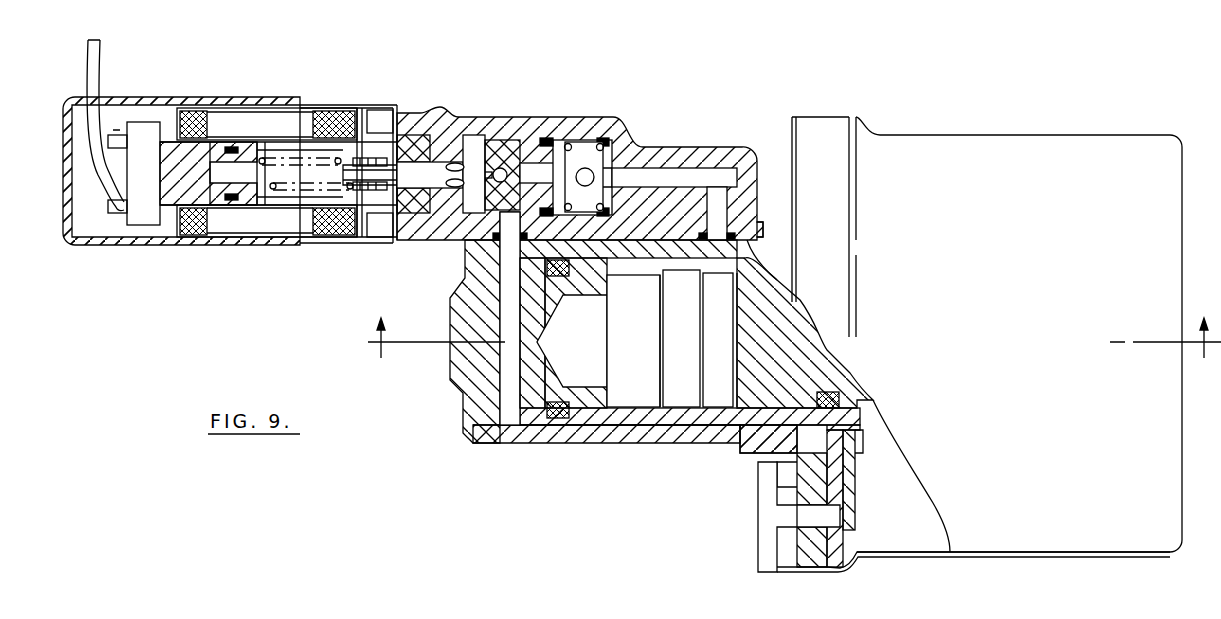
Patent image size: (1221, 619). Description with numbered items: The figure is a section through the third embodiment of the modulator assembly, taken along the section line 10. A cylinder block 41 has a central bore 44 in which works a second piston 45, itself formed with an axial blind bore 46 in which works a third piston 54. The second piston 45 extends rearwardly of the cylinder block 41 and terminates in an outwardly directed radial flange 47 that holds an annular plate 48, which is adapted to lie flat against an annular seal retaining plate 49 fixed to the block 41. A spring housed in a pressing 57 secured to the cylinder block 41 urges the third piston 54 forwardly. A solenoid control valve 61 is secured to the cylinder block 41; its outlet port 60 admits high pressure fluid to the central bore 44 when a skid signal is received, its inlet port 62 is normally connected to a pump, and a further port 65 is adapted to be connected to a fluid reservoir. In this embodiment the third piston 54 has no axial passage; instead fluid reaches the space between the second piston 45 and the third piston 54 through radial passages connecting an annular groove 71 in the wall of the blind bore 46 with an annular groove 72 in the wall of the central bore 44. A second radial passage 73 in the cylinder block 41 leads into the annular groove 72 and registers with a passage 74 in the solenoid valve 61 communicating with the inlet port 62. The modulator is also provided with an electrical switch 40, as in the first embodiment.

The section line 10- 10 is at (794, 326).
The electrical switch 40 is at (772, 542).
The cylinder block 41 is at (607, 432).
The central bore 44 is at (513, 427).
The second piston 45 is at (530, 420).
The axial blind bore 46 is at (636, 407).
The outwardly directed radial flange 47 is at (865, 434).
The annular plate 48 is at (848, 485).
The annular seal retaining plate 49 is at (852, 552).
The third piston 54 is at (803, 357).
The pressing 57 is at (983, 334).
The outlet port 60 is at (473, 239).
The solenoid control valve 61 is at (513, 116).
The inlet port 62 is at (586, 176).
The further port 65 is at (456, 165).
The annular groove 71 is at (665, 273).
The annular groove 72 is at (732, 262).
The second radial passage 73 is at (718, 248).
The passage 74 is at (711, 210).